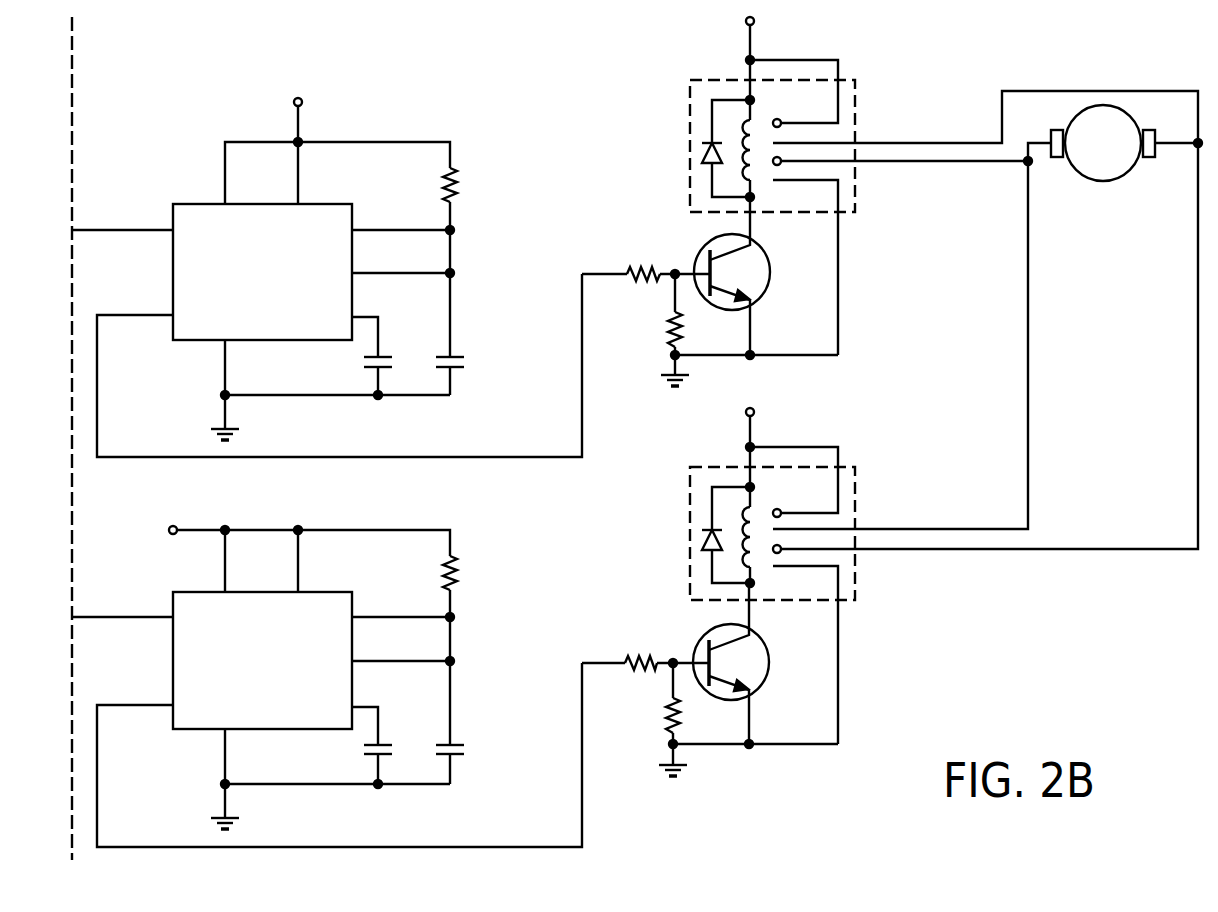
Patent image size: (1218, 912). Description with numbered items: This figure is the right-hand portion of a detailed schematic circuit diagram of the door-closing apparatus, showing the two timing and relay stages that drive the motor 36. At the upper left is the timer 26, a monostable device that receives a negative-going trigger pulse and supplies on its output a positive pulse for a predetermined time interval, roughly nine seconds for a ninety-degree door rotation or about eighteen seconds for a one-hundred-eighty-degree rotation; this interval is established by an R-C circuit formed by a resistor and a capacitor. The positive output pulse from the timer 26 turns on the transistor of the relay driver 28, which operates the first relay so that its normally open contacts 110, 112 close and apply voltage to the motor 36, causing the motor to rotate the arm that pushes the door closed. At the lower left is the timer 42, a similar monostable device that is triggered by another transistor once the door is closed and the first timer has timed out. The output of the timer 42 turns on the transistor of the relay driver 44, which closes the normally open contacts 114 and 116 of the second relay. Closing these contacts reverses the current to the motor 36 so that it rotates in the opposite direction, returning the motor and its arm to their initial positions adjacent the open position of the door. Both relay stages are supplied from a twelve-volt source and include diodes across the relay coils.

The timer 26 is at (200, 225).
The relay driver 28 is at (656, 215).
The motor 36 is at (1117, 172).
The timer 42 is at (203, 713).
The relay driver 44 is at (656, 623).
The normally open contact 110 is at (912, 141).
The normally open contact 112 is at (953, 165).
The normally open contact 114 is at (933, 528).
The normally open contact 116 is at (975, 551).